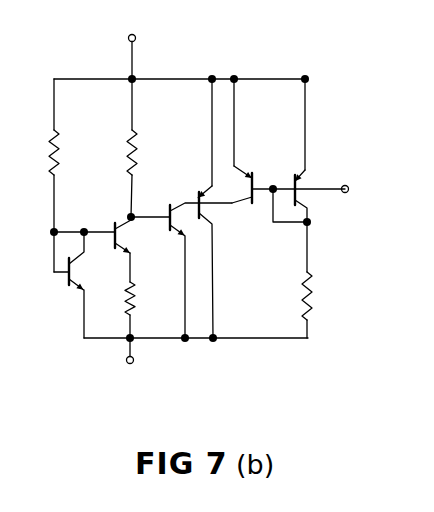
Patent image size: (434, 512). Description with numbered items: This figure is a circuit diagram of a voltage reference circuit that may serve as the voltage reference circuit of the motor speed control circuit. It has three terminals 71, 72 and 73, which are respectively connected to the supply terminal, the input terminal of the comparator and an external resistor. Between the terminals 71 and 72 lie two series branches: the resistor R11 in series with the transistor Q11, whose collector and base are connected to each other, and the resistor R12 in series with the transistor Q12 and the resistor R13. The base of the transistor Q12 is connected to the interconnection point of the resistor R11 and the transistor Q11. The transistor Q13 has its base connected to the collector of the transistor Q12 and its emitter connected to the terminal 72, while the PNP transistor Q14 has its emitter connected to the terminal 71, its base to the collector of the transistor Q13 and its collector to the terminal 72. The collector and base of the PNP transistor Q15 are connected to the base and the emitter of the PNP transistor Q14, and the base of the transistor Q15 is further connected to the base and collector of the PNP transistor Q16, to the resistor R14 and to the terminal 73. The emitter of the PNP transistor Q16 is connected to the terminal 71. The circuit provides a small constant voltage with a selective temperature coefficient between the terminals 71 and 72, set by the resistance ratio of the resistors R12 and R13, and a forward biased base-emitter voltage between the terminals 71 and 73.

The terminal 71 is at (136, 36).
The terminal 72 is at (134, 362).
The terminal 73 is at (348, 187).
The resistor R11 is at (75, 175).
The resistor R12 is at (149, 148).
The resistor R13 is at (148, 307).
The resistor R14 is at (324, 280).
The transistor Q11 is at (85, 268).
The transistor Q12 is at (126, 240).
The transistor Q13 is at (167, 196).
The PNP transistor Q14 is at (195, 190).
The PNP transistor Q15 is at (246, 206).
The PNP transistor Q16 is at (291, 176).